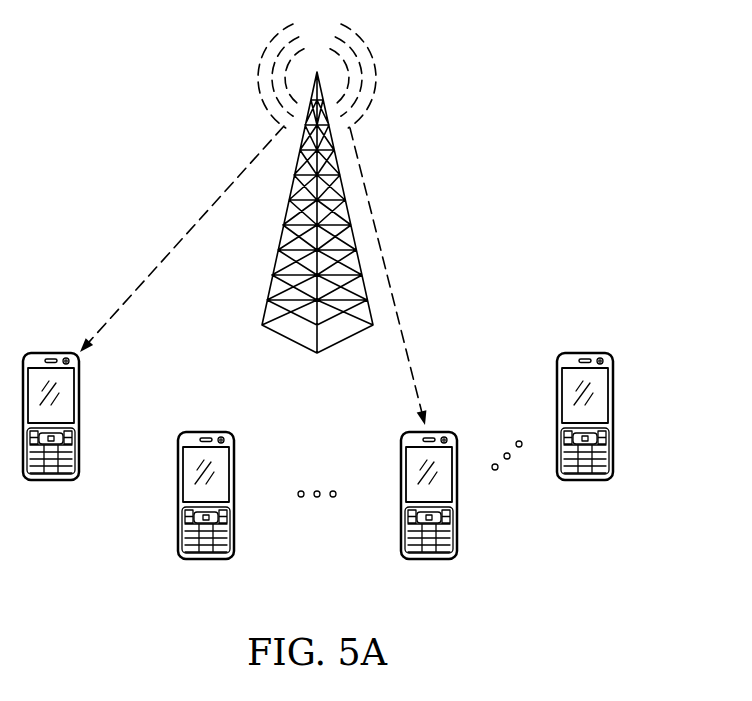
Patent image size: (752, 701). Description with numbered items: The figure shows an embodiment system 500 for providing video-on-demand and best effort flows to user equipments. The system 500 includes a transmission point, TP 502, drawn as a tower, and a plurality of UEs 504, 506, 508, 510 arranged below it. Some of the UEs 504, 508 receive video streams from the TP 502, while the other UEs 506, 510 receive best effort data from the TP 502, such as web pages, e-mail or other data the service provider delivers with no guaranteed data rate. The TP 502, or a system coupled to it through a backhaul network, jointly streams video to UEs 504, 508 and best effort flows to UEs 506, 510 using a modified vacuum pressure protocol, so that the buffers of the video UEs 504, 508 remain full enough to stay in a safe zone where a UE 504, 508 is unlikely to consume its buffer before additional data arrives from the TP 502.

The system 500 is at (110, 108).
The TP 502 is at (281, 237).
The UE 504 is at (49, 480).
The UE 506 is at (205, 558).
The UE 508 is at (430, 558).
The UE 510 is at (582, 480).